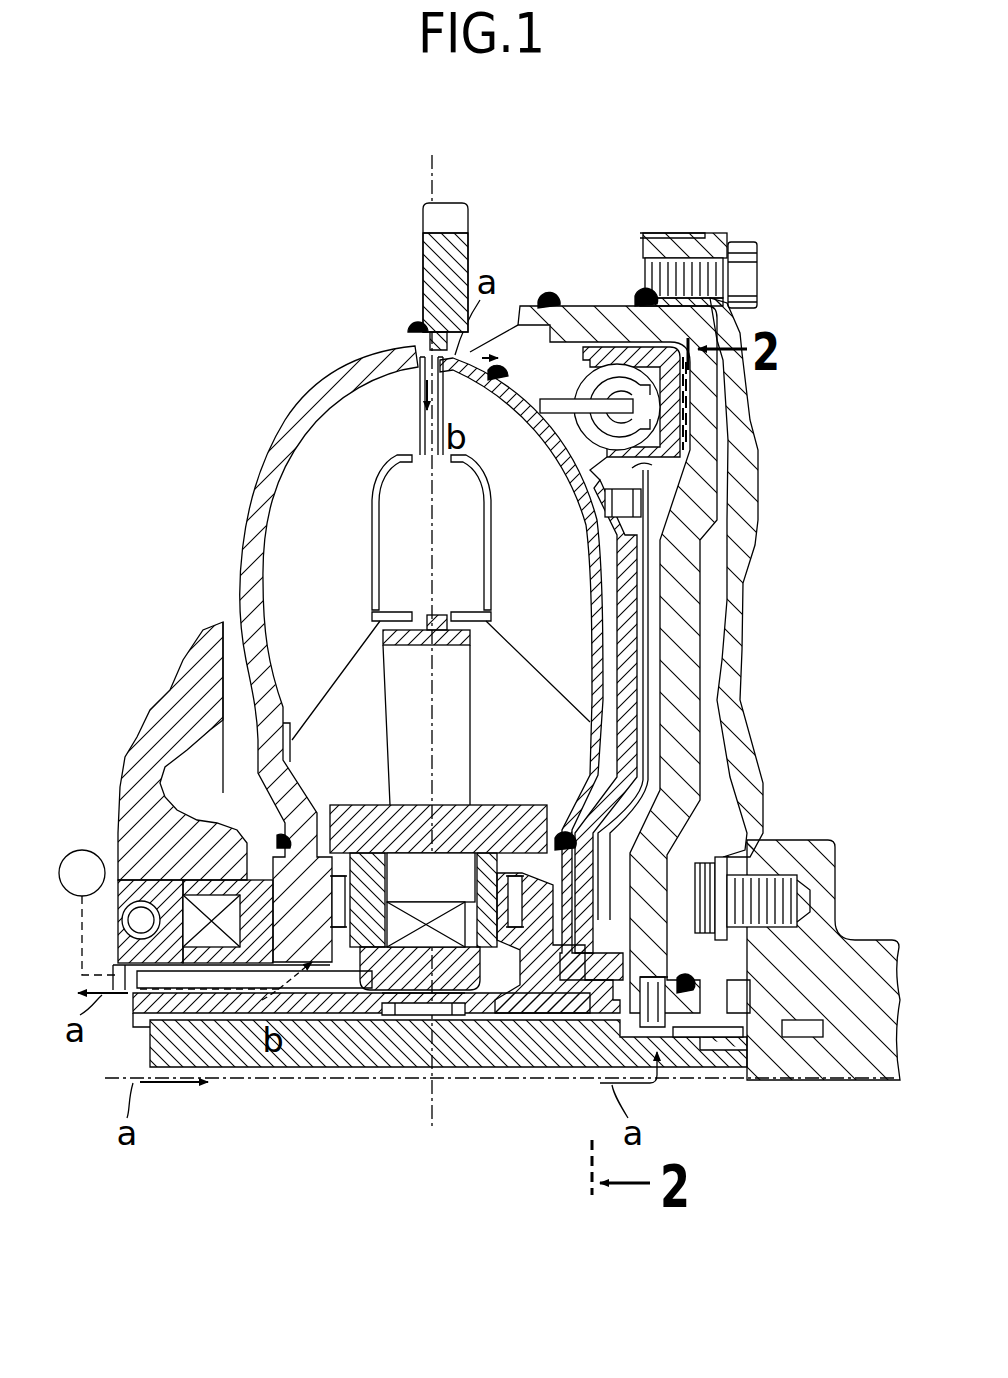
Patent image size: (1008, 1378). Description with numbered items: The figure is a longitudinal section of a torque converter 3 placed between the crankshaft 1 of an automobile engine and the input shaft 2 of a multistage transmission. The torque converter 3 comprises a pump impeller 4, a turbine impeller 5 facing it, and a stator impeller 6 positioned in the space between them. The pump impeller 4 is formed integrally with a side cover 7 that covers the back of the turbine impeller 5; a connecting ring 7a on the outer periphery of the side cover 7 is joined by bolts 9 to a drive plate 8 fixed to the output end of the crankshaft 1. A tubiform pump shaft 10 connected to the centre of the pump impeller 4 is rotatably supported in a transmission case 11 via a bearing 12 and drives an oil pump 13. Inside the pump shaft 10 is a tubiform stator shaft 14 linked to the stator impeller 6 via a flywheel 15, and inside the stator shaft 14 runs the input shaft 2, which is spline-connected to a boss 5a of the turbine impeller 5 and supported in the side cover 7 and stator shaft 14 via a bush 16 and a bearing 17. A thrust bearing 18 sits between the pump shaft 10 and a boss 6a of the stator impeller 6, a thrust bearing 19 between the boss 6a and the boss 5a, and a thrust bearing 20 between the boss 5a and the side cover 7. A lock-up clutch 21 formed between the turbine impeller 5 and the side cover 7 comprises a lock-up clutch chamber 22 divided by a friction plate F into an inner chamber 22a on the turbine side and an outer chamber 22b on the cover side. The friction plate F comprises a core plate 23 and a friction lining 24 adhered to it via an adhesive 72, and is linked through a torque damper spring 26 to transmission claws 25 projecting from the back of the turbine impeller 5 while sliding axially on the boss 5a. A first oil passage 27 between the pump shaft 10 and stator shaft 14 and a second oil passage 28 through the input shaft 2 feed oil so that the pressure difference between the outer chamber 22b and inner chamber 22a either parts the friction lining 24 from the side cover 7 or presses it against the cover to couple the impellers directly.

The crankshaft 1 is at (860, 945).
The input shaft 2 is at (240, 1055).
The torque converter 3 is at (547, 212).
The pump impeller 4 is at (292, 442).
The turbine impeller 5 is at (436, 355).
The boss 5a is at (546, 1055).
The stator impeller 6 is at (458, 722).
The boss 6a is at (470, 808).
The side cover 7 is at (704, 496).
The connecting ring 7a is at (688, 247).
The drive plate 8 is at (742, 590).
The bolts 9 is at (757, 270).
The pump shaft 10 is at (203, 910).
The transmission case 11 is at (190, 692).
The bearing 12 is at (143, 905).
The oil pump 13 is at (82, 862).
The stator shaft 14 is at (312, 1028).
The flywheel 15 is at (390, 855).
The bush 16 is at (735, 1037).
The bearing 17 is at (405, 1018).
The thrust bearing 18 is at (336, 900).
The thrust bearing 19 is at (418, 925).
The thrust bearing 20 is at (668, 1027).
The lock-up clutch 21 is at (570, 363).
The lock-up clutch chamber 22 is at (492, 505).
The inner chamber 22a is at (441, 617).
The outer chamber 22b is at (471, 516).
The core plate 23 is at (622, 630).
The friction lining 24 is at (712, 447).
The transmission claws 25 is at (586, 442).
The torque damper spring 26 is at (560, 413).
The first oil passage 27 is at (205, 995).
The second oil passage 28 is at (283, 1085).
The adhesive 72 is at (705, 420).
The friction plate F is at (703, 659).